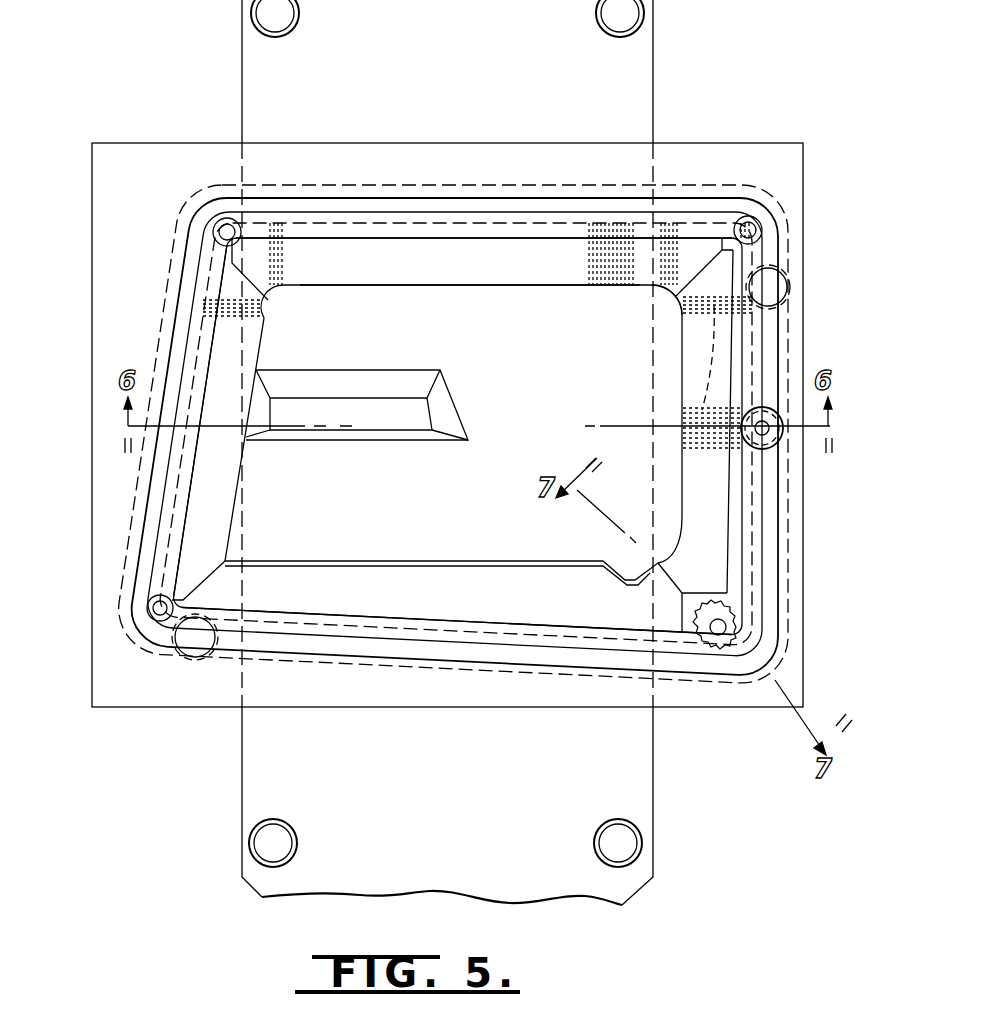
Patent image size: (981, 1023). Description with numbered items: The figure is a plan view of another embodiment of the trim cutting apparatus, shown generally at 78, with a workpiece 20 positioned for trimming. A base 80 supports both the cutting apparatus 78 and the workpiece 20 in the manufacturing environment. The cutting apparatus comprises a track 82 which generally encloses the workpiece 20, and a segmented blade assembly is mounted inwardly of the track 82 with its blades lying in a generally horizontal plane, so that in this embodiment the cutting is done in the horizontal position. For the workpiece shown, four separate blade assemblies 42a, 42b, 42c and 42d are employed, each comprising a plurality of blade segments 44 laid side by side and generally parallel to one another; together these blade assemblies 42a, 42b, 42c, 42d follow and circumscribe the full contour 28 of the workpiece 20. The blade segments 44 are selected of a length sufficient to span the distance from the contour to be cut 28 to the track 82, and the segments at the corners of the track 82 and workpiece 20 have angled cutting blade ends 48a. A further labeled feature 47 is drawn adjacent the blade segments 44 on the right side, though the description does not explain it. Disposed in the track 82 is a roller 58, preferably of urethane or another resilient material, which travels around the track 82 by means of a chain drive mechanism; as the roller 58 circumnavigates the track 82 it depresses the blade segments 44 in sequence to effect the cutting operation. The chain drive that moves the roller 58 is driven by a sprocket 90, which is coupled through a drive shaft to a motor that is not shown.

The workpiece 20 is at (466, 501).
The contour to be cut 28 is at (466, 288).
The blade assembly 42a is at (460, 274).
The blade assembly 42b is at (236, 474).
The blade assembly 42c is at (474, 602).
The blade assembly 42d is at (727, 526).
The blade segments 44 is at (713, 357).
The hidden fastening portion 47 is at (708, 449).
The angled cutting blade ends 48a is at (668, 302).
The roller 58 is at (773, 433).
The trim cutting apparatus 78 is at (694, 726).
The base 80 is at (641, 888).
The track 82 is at (141, 653).
The sprocket 90 is at (712, 612).